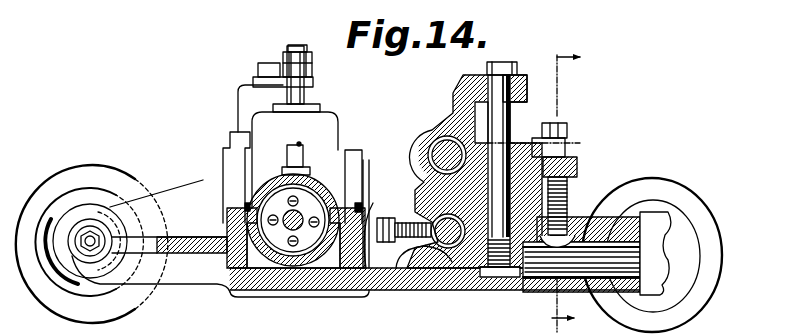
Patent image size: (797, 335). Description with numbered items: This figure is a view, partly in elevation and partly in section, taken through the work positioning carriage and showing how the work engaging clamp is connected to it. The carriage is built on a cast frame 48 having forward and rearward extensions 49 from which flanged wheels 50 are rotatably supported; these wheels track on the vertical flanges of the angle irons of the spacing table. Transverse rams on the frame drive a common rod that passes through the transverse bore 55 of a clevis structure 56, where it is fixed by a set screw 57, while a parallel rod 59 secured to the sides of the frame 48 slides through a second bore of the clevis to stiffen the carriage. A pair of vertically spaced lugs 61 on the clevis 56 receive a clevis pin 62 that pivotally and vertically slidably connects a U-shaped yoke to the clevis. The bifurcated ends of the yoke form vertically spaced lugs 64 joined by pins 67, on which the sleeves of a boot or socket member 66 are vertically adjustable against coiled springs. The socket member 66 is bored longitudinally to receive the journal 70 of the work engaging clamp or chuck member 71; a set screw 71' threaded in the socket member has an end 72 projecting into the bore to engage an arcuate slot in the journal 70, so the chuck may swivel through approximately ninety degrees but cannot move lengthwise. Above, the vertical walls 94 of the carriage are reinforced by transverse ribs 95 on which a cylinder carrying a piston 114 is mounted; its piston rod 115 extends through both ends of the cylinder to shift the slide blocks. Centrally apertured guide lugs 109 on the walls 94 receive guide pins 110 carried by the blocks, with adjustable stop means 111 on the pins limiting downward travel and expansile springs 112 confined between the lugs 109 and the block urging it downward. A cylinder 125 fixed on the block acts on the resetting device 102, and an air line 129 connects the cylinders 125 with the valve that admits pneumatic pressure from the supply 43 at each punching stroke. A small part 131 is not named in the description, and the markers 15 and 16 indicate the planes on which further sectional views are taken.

The flanged wheels 50 is at (76, 142).
The forward and rearward extensions 49 is at (112, 208).
The cast frame 48 is at (190, 198).
The resetting device 102 is at (268, 318).
The guide lugs 109 is at (337, 113).
The piston rod 115 is at (296, 212).
The piston 114 is at (306, 236).
The expansile springs 112 is at (238, 174).
The vertical walls 94 is at (366, 167).
The pin 131 is at (297, 144).
The cylinder 125 is at (240, 99).
The air line 129 is at (262, 70).
The guide pins 110 is at (290, 50).
The stop means 111 is at (313, 62).
The clevis structure 56 is at (432, 138).
The rod 59 is at (444, 160).
The transverse ribs 95 is at (226, 250).
The clevis pin 62 is at (500, 65).
The lugs 61 is at (523, 80).
The section line 15 is at (572, 76).
The section line 16 is at (565, 300).
The pneumatic pressure supply 43 is at (528, 142).
The lugs 64 is at (565, 152).
The pins 67 is at (573, 130).
The set screw 71' is at (605, 136).
The boot or socket member 66 is at (625, 214).
The journal 70 is at (581, 267).
The end of set screw 72 is at (562, 252).
The work engaging clamp or chuck member 71 is at (683, 272).
The set screw 57 is at (390, 245).
The transverse bore 55 is at (446, 248).